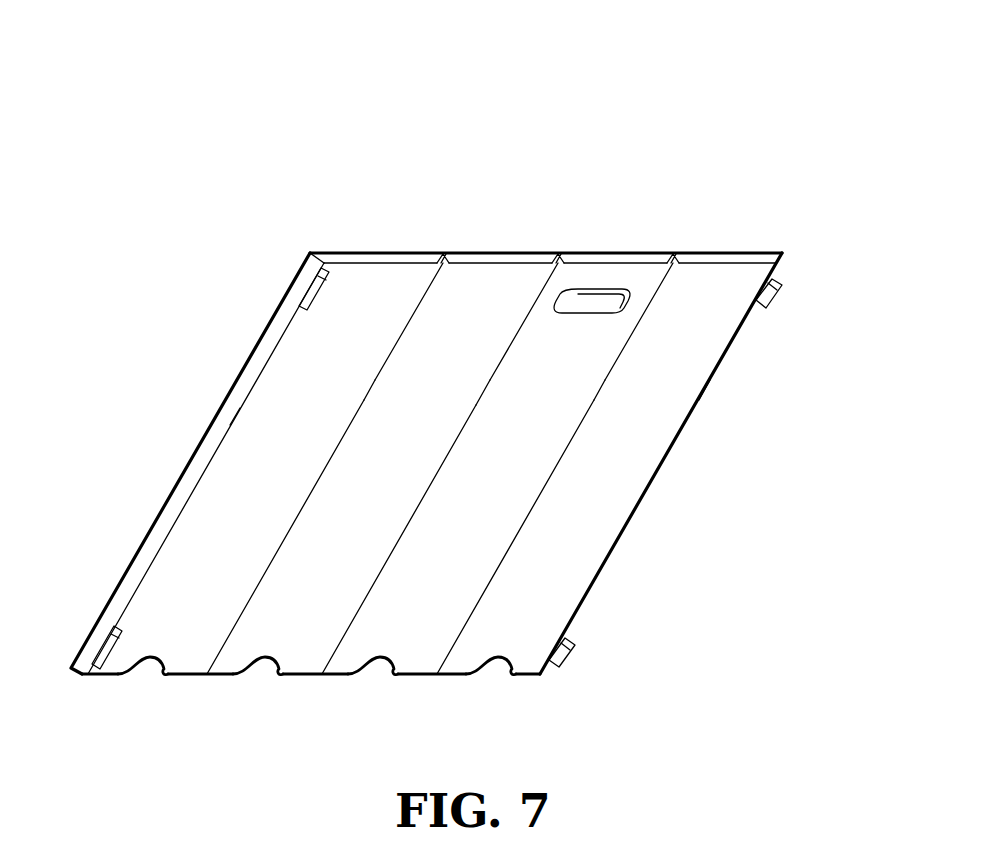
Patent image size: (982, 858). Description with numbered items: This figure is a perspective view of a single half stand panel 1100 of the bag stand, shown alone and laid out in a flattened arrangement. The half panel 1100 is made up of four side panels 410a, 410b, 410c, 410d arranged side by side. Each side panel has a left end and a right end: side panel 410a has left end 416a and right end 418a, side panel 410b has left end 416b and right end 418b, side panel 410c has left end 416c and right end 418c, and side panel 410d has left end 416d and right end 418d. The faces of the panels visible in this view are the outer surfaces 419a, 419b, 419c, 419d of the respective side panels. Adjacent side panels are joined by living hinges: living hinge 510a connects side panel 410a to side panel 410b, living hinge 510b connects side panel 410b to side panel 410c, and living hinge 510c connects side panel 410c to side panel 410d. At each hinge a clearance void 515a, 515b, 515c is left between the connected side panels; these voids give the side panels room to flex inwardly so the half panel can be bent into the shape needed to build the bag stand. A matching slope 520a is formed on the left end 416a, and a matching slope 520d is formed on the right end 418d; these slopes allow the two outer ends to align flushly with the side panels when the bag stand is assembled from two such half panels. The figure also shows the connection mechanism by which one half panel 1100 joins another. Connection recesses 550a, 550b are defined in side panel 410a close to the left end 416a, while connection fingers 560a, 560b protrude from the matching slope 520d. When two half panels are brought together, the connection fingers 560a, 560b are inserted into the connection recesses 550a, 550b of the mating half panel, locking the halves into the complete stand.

The half stand panel 1100 is at (435, 52).
The side panel 410a is at (360, 284).
The side panel 410b is at (466, 284).
The side panel 410c is at (578, 277).
The side panel 410d is at (712, 282).
The left end 416a is at (228, 427).
The left end 416b is at (403, 413).
The left end 416c is at (468, 420).
The left end 416d is at (578, 428).
The right end 418a is at (361, 399).
The right end 418b is at (472, 413).
The right end 418c is at (595, 398).
The right end 418d is at (694, 408).
The outer surface 419a is at (272, 486).
The outer surface 419b is at (395, 486).
The outer surface 419c is at (519, 486).
The outer surface 419d is at (640, 486).
The living hinge 510a is at (440, 284).
The living hinge 510b is at (536, 281).
The living hinge 510c is at (655, 287).
The clearance void 515a is at (438, 257).
The clearance void 515b is at (553, 255).
The clearance void 515c is at (673, 255).
The matching slope 520a is at (307, 257).
The matching slope 520d is at (782, 254).
The connection recess 550a is at (302, 286).
The connection recess 550b is at (100, 645).
The connection finger 560a is at (781, 291).
The connection finger 560b is at (575, 648).